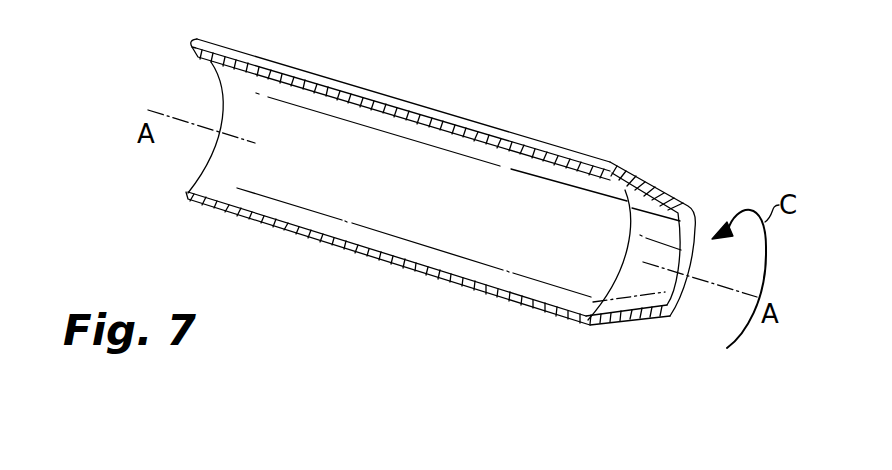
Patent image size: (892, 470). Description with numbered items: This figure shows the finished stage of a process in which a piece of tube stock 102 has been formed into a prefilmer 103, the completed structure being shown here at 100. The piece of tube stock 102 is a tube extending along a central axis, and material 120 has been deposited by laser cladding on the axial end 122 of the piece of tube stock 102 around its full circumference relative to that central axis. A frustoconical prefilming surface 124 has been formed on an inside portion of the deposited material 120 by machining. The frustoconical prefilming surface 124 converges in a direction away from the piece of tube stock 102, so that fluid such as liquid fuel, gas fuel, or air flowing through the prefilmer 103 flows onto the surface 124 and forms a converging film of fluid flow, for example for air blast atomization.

The tubular device 100 is at (607, 118).
The piece of tube stock 102 is at (338, 78).
The prefilmer 103 is at (338, 78).
The deposited material 120 is at (666, 181).
The axial end 122 is at (579, 325).
The frustoconical prefilming surface 124 is at (647, 282).